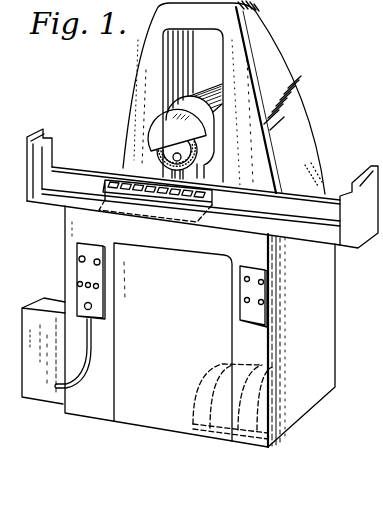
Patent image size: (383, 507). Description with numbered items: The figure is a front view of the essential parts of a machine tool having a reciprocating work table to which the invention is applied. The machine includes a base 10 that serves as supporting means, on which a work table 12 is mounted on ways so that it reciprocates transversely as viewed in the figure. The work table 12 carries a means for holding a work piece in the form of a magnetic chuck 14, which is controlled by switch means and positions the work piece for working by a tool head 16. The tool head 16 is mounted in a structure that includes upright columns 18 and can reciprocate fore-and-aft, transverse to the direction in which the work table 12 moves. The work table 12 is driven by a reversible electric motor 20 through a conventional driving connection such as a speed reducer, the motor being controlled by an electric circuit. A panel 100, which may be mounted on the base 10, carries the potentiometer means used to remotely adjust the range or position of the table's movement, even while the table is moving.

The base 10 is at (307, 397).
The work table 12 is at (300, 203).
The magnetic chuck 14 is at (116, 186).
The tool head 16 is at (168, 139).
The upright columns 18 is at (286, 53).
The reversible electric motor 20 is at (197, 408).
The panel 100 is at (82, 305).